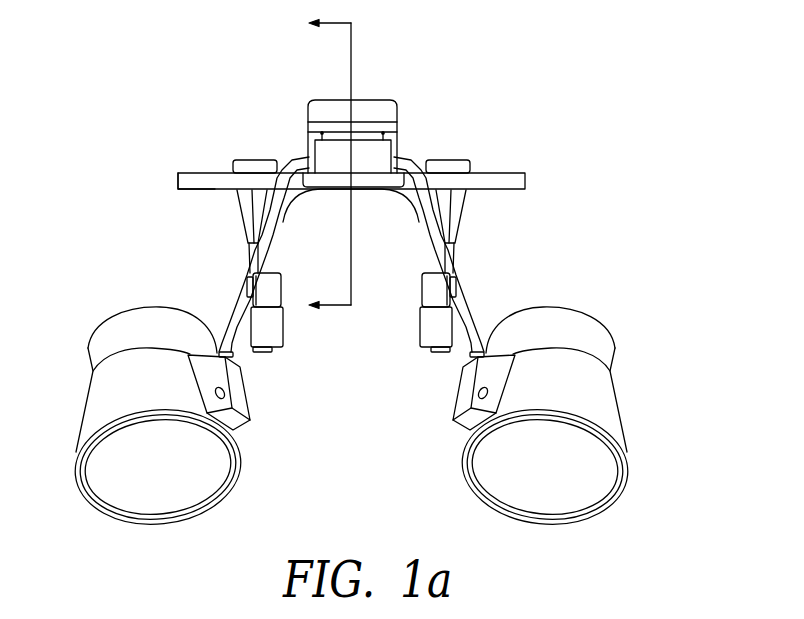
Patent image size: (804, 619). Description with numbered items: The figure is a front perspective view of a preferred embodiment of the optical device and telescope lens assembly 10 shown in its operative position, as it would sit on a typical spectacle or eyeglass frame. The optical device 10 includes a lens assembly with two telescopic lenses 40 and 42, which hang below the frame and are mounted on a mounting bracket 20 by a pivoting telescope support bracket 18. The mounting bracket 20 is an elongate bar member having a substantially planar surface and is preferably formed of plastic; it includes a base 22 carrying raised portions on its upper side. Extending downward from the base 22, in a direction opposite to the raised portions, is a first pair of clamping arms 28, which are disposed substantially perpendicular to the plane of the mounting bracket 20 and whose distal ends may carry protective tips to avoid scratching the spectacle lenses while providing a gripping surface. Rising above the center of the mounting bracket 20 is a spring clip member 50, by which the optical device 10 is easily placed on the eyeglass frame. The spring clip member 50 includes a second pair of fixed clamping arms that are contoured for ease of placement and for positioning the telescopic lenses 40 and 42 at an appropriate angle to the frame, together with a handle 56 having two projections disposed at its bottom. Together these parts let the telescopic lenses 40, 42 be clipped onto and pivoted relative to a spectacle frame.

The optical device and telescope lens assembly 10 is at (367, 271).
The pivoting telescope support bracket 18 is at (465, 303).
The mounting bracket 20 is at (526, 178).
The base 22 is at (195, 173).
The first pair of clamping arms 28 is at (432, 293).
The telescopic lens 40 is at (123, 482).
The telescopic lens 42 is at (592, 475).
The spring clip member 50 is at (458, 160).
The handle 56 is at (327, 112).